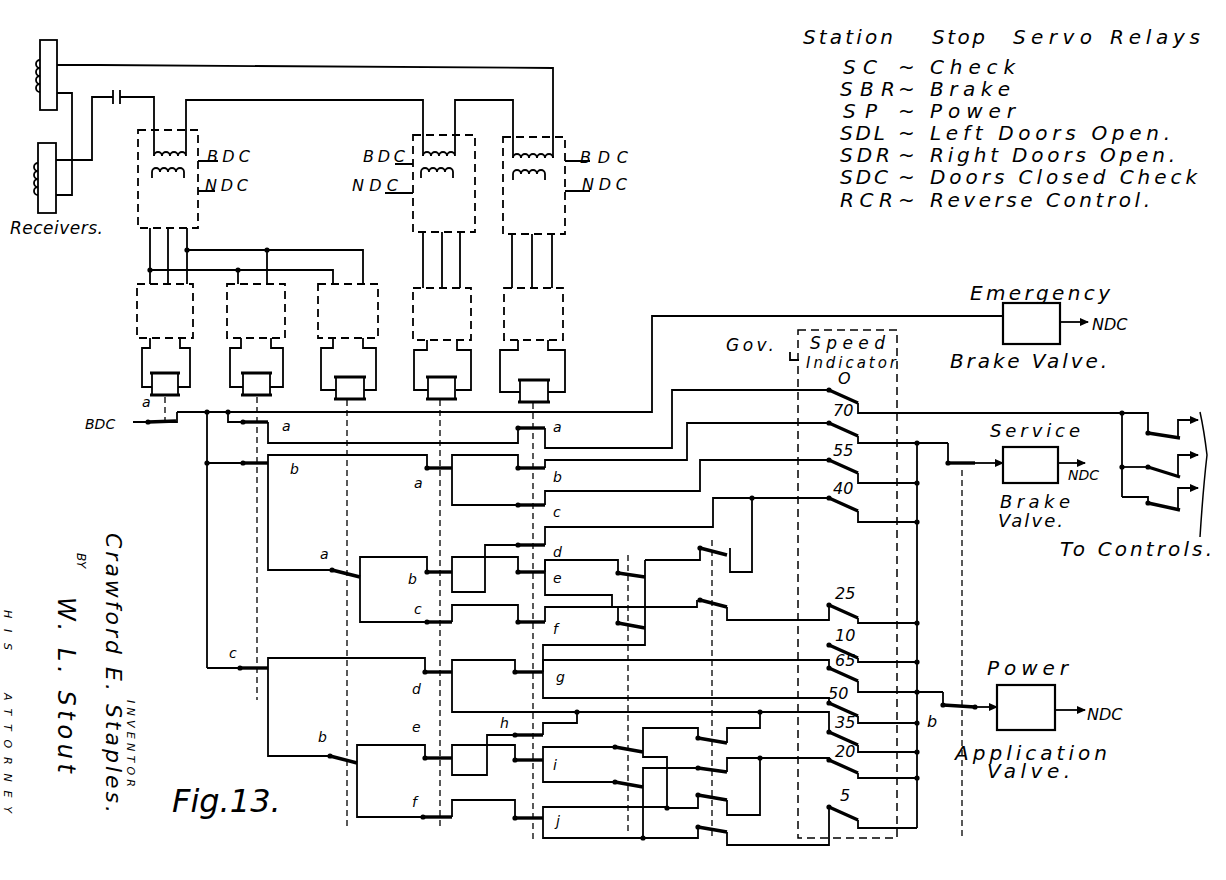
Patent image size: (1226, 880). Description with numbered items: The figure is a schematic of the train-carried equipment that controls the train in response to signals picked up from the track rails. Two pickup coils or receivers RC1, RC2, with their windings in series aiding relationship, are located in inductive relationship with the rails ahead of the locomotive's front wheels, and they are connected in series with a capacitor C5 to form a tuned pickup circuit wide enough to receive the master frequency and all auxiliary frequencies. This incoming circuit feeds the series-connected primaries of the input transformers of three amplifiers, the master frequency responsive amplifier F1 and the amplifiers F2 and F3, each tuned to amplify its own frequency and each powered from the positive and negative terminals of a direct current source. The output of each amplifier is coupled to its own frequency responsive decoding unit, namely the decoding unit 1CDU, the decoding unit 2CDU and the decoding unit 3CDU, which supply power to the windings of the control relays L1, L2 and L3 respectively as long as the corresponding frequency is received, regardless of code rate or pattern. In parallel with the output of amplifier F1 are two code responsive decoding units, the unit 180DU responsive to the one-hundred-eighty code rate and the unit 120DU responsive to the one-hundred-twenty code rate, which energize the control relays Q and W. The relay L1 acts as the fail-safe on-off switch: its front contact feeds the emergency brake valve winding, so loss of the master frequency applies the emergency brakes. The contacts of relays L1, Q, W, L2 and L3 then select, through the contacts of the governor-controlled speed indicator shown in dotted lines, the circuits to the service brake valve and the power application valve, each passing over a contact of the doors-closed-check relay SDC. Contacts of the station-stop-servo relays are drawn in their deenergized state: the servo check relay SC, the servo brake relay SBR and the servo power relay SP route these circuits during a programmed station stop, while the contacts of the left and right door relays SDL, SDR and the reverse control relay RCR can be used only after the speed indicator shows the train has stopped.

The receiver RC1 is at (43, 62).
The receiver RC2 is at (39, 166).
The capacitor C5 is at (108, 86).
The master frequency responsive amplifier F1 is at (198, 224).
The amplifier F2 is at (463, 166).
The amplifier F3 is at (534, 185).
The decoding unit 1CDU is at (165, 311).
The code responsive decoding unit 180DU is at (256, 311).
The code responsive decoding unit 120DU is at (348, 311).
The decoding unit 2CDU is at (442, 314).
The decoding unit 3CDU is at (533, 314).
The control relay L1 is at (166, 366).
The control relay Q is at (256, 366).
The control relay W is at (348, 368).
The control relay L2 is at (442, 369).
The control relay L3 is at (532, 371).
The servo check relay SC is at (631, 685).
The servo brake relay SBR is at (723, 684).
The servo power relay SP is at (721, 730).
The doors-closed-check relay SDC is at (961, 640).
The left doors open relay SDL is at (1160, 415).
The right doors open relay SDR is at (1160, 460).
The reverse control relay RCR is at (1160, 494).